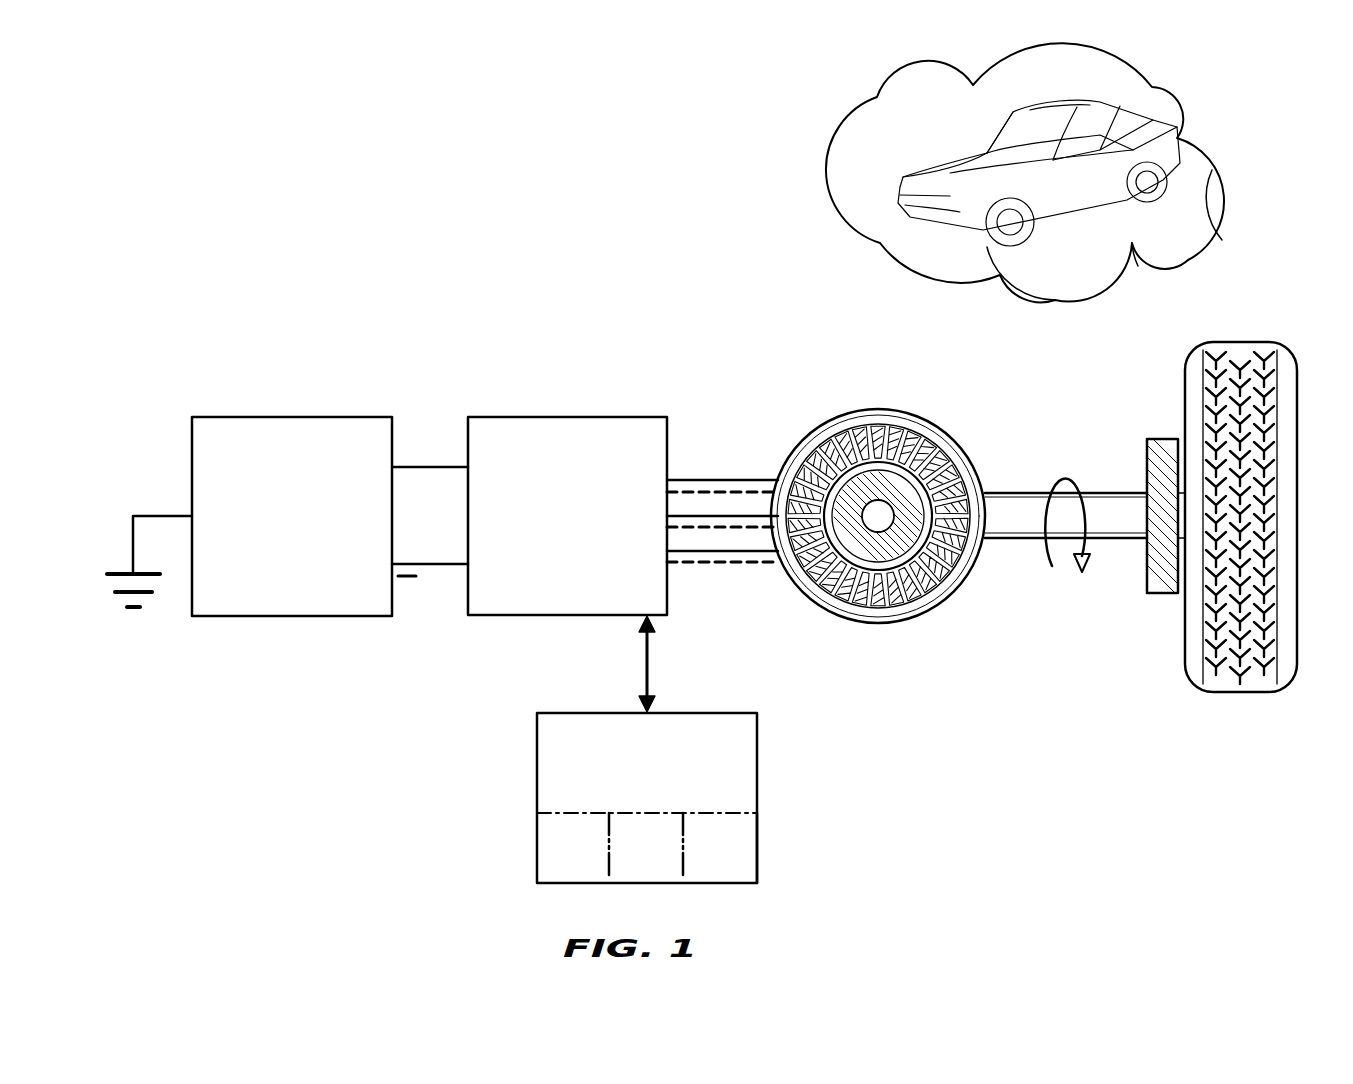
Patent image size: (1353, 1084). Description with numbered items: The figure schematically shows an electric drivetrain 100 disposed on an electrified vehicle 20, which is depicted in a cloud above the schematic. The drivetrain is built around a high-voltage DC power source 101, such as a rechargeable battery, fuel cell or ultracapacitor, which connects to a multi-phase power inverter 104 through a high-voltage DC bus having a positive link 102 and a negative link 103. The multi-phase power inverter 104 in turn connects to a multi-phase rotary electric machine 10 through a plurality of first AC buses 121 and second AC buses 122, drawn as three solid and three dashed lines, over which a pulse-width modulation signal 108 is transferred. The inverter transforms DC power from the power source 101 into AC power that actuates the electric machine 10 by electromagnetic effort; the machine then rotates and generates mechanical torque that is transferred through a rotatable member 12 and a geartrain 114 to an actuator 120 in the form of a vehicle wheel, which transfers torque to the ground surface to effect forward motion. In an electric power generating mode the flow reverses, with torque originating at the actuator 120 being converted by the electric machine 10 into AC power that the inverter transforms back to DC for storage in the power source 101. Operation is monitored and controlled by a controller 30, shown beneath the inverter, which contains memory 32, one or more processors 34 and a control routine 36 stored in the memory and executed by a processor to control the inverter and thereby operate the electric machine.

The electric drivetrain 100 is at (363, 390).
The electrified vehicle 20 is at (930, 140).
The electric machine 10 is at (877, 408).
The rotatable member 12 is at (1103, 493).
The geartrain 114 is at (1162, 594).
The actuator 120 is at (1237, 692).
The high-voltage DC power source 101 is at (314, 532).
The positive link 102 is at (428, 464).
The negative link 103 is at (430, 568).
The multi-phase power inverter 104 is at (590, 532).
The pulse-width modulation signal 108 is at (698, 676).
The first AC buses 121 is at (685, 551).
The second AC buses 122 is at (750, 492).
The controller 30 is at (661, 783).
The memory 32 is at (587, 866).
The processors 34 is at (661, 866).
The control routine 36 is at (735, 866).